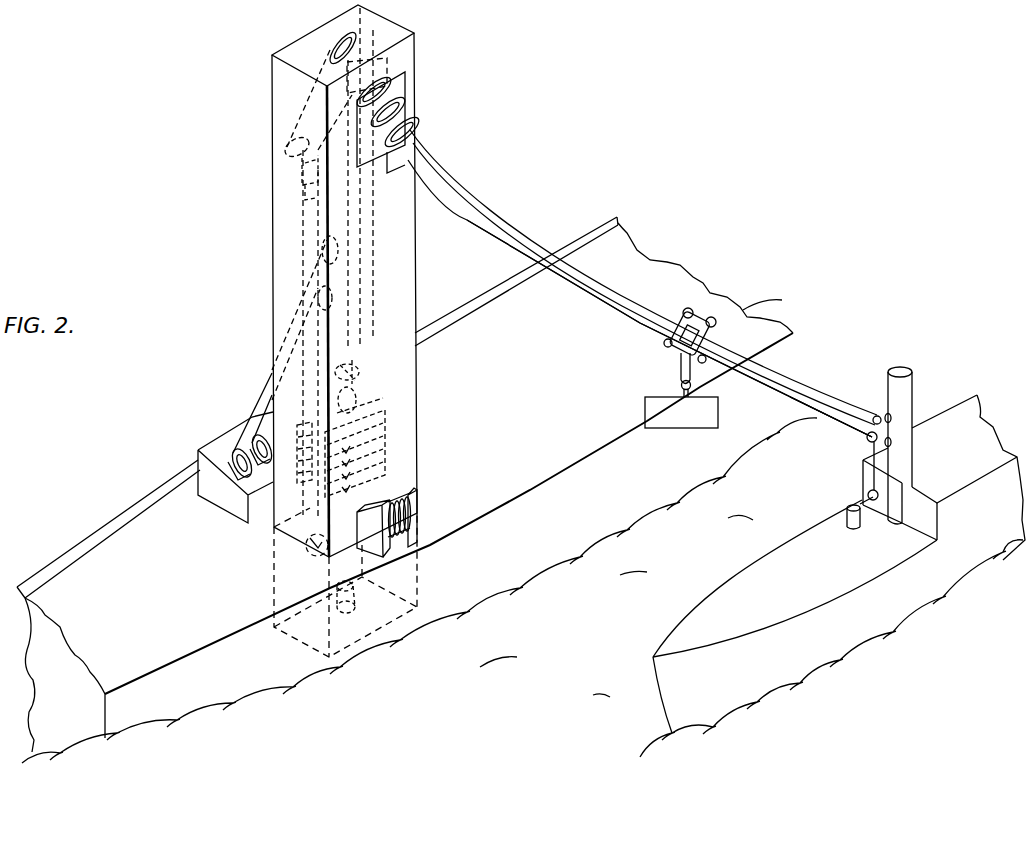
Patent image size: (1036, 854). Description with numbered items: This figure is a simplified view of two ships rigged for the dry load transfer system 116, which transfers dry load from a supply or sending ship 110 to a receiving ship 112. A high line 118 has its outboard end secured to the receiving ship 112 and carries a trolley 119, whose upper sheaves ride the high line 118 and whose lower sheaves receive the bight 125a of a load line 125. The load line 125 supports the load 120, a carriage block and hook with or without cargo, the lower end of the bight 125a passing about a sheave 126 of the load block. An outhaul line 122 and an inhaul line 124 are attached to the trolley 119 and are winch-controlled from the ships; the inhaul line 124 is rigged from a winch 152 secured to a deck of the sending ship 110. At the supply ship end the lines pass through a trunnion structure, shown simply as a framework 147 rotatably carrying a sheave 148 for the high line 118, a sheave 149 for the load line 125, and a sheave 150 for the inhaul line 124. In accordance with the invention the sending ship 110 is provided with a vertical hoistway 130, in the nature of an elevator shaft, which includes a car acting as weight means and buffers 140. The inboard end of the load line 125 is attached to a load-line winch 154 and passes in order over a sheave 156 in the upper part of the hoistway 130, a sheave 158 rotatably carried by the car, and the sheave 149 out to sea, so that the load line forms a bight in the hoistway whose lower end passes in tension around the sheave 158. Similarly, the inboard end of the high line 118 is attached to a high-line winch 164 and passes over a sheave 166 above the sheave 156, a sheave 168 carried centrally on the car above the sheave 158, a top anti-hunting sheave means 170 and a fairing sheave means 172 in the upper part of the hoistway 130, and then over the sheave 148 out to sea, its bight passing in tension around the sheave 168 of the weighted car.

The supply ship 110 is at (521, 410).
The receiving ship 112 is at (793, 596).
The dry load transfer system 116 is at (566, 221).
The high line 118 is at (493, 205).
The trolley 119 is at (686, 312).
The load 120 is at (697, 421).
The outhaul line 122 is at (847, 425).
The inhaul line 124 is at (467, 219).
The load line 125 is at (618, 312).
The bight of the load line 125a is at (676, 360).
The sheave of the load block 126 is at (680, 384).
The vertical hoistway 130 is at (272, 225).
The buffers 140 is at (357, 605).
The framework 147 is at (408, 112).
The sheave for the high line 148 is at (405, 93).
The sheave for the load line 149 is at (418, 132).
The sheave for the inhaul line 150 is at (393, 162).
The winch 152 is at (418, 518).
The load-line winch 154 is at (228, 485).
The sheave 156 is at (313, 291).
The sheave 158 is at (356, 405).
The high-line winch 164 is at (270, 468).
The sheave 166 is at (317, 242).
The sheave 168 is at (359, 369).
The top anti-hunting sheave means 170 is at (330, 42).
The fairing sheave means 172 is at (283, 155).